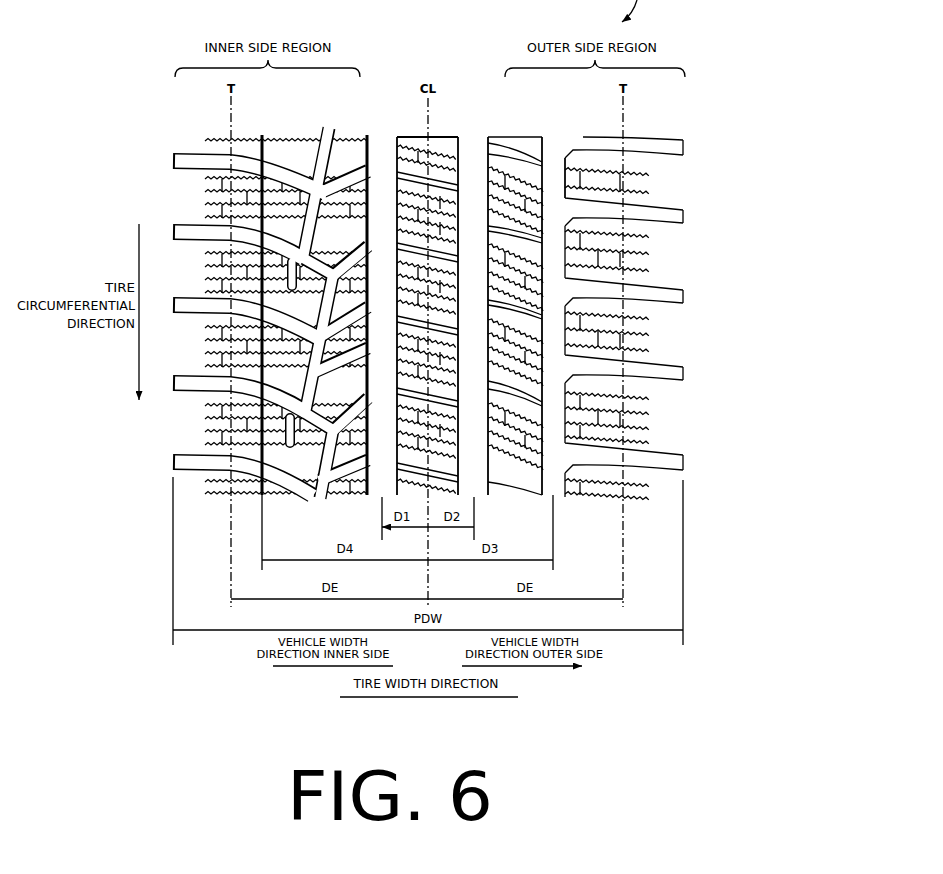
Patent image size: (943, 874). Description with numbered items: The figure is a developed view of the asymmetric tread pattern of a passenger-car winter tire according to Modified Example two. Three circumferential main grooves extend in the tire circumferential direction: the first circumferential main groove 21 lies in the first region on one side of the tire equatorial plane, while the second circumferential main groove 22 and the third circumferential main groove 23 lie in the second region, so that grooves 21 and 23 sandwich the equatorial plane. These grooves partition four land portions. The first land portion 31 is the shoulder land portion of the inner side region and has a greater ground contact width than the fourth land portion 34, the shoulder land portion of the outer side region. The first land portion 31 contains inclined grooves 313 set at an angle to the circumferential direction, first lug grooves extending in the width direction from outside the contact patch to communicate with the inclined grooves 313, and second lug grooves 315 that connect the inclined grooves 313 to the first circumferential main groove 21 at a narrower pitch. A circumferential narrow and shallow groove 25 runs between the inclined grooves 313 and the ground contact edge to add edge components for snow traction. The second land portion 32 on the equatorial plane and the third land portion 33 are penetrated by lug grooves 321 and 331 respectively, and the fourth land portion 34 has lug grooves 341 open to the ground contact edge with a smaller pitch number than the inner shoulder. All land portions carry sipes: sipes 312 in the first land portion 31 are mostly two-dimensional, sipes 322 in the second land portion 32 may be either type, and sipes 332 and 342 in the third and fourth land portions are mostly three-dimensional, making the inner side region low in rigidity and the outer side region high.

The first circumferential main groove 21 is at (377, 137).
The second circumferential main groove 22 is at (472, 137).
The third circumferential main groove 23 is at (553, 137).
The circumferential narrow and shallow groove 25 is at (262, 136).
The first land portion 31 is at (300, 138).
The sipes 312 is at (205, 178).
The inclined grooves 313 is at (330, 137).
The second lug grooves 315 is at (368, 236).
The second land portion 32 is at (440, 137).
The lug grooves 321 is at (457, 184).
The sipes 322 is at (476, 356).
The third land portion 33 is at (506, 139).
The lug grooves 331 is at (535, 233).
The sipes 332 is at (540, 368).
The fourth land portion 34 is at (585, 152).
The lug grooves 341 is at (656, 208).
The sipes 342 is at (644, 269).